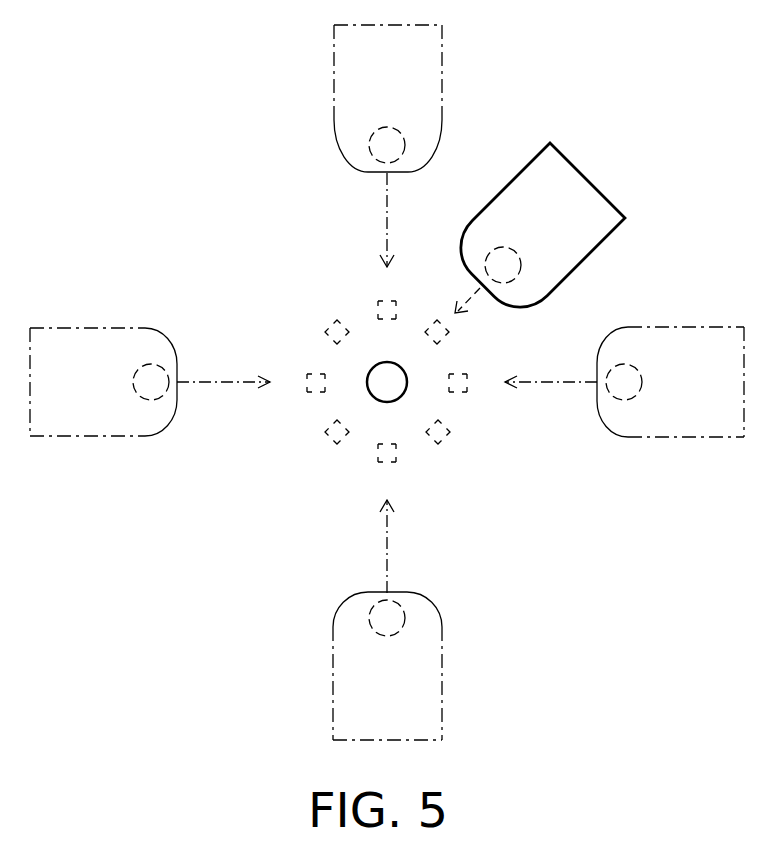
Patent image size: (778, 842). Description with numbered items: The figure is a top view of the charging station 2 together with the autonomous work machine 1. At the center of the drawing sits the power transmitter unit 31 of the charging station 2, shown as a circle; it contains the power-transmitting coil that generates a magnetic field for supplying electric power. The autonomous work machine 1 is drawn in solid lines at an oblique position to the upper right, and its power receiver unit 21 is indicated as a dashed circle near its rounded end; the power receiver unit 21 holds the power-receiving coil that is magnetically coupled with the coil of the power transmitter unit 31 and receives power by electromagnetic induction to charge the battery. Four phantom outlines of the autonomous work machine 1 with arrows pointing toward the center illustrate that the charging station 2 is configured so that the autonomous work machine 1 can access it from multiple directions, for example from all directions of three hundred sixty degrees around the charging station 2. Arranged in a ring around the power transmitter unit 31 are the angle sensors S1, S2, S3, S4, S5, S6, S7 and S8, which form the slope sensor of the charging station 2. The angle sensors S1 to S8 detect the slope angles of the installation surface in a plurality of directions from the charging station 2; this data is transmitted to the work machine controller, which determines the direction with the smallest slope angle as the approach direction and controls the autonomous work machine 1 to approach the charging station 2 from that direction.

The autonomous work machine 1 is at (573, 202).
The charging station 2 is at (275, 272).
The power receiver unit 21 is at (507, 245).
The power transmitter unit 31 is at (372, 364).
The angle sensor S1 is at (397, 307).
The angle sensor S2 is at (448, 340).
The angle sensor S3 is at (459, 393).
The angle sensor S4 is at (445, 440).
The angle sensor S5 is at (378, 452).
The angle sensor S6 is at (330, 438).
The angle sensor S7 is at (313, 395).
The angle sensor S8 is at (328, 326).